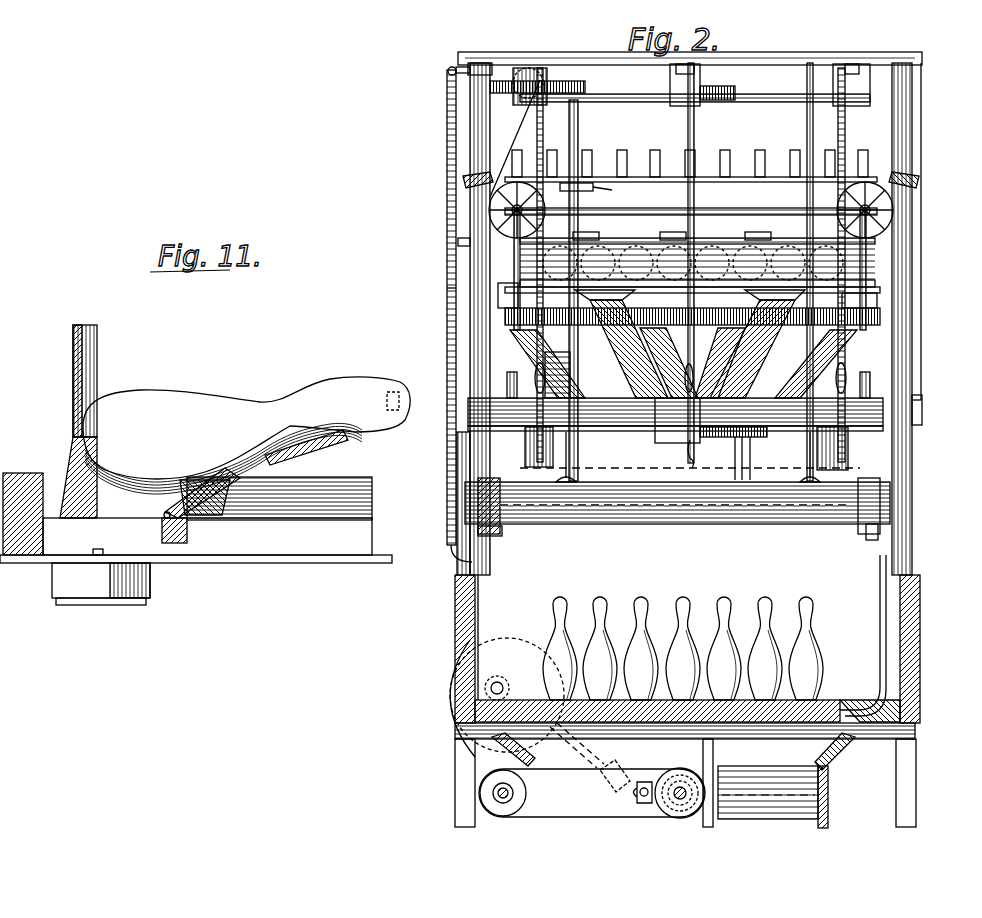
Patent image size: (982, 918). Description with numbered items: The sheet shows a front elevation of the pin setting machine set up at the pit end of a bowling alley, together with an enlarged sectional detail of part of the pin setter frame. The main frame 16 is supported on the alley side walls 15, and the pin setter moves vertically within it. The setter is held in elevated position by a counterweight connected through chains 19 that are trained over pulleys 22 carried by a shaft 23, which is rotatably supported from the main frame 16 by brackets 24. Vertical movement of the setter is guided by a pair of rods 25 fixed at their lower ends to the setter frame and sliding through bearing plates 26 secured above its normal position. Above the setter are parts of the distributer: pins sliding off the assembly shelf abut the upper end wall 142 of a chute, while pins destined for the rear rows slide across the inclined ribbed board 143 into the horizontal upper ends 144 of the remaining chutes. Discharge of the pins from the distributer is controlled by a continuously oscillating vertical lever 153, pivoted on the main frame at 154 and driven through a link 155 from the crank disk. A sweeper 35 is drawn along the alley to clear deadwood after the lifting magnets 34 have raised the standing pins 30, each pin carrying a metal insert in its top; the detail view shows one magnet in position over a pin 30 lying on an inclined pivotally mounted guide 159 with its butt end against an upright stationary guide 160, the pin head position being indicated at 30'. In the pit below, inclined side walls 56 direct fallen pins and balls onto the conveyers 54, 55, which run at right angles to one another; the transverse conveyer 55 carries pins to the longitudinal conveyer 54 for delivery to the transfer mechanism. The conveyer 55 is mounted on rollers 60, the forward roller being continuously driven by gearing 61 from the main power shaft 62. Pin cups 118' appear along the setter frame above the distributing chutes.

In FIG. 2, the side walls 15 is at (832, 696).
In FIG. 2, the main frame 16 is at (912, 386).
In FIG. 2, the chains 19 is at (536, 143).
In FIG. 2, the pulleys 22 is at (688, 108).
In FIG. 2, the shaft 23 is at (625, 100).
In FIG. 2, the brackets 24 is at (700, 78).
In FIG. 2, the rods 25 is at (588, 228).
In FIG. 2, the bearing plates 26 is at (582, 432).
In FIG. 2, the pin 30 is at (684, 634).
In FIG. 11, the pin 30 is at (246, 420).
In FIG. 11, the pin head position 30' is at (387, 376).
In FIG. 11, the magnets 34 is at (55, 577).
In FIG. 2, the sweeper 35 is at (638, 520).
In FIG. 2, the conveyer 54 is at (764, 774).
In FIG. 2, the conveyer 55 is at (625, 770).
In FIG. 2, the inclined side walls 56 is at (497, 742).
In FIG. 2, the rollers 60 is at (514, 794).
In FIG. 2, the gearing 61 is at (577, 766).
In FIG. 2, the main power shaft 62 is at (440, 725).
In FIG. 2, the pin cups 118' is at (693, 247).
In FIG. 2, the upper end wall 142 is at (612, 302).
In FIG. 2, the inclined ribbed board 143 is at (872, 316).
In FIG. 2, the upper ends 144 is at (858, 338).
In FIG. 2, the oscillating vertical lever 153 is at (447, 288).
In FIG. 2, the pivot 154 is at (460, 243).
In FIG. 2, the link 155 is at (458, 66).
In FIG. 11, the inclined pivotally mounted guides 159 is at (300, 450).
In FIG. 11, the upright stationary guides 160 is at (97, 368).